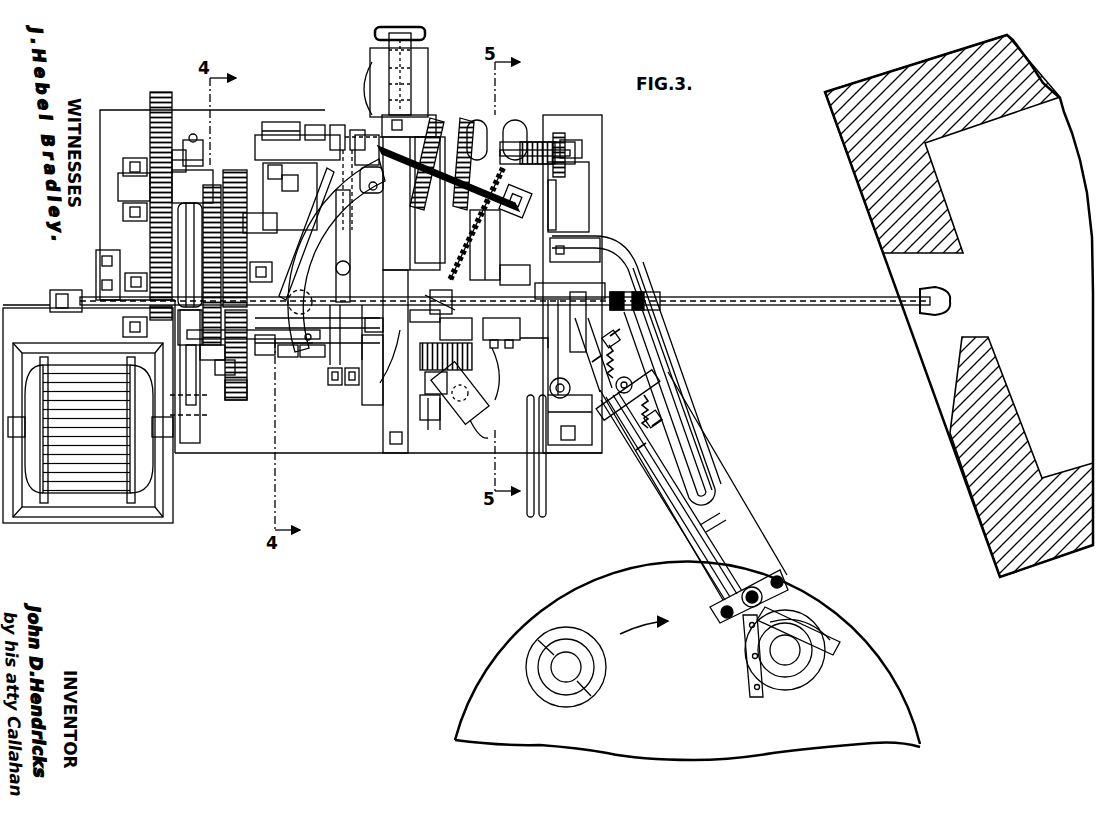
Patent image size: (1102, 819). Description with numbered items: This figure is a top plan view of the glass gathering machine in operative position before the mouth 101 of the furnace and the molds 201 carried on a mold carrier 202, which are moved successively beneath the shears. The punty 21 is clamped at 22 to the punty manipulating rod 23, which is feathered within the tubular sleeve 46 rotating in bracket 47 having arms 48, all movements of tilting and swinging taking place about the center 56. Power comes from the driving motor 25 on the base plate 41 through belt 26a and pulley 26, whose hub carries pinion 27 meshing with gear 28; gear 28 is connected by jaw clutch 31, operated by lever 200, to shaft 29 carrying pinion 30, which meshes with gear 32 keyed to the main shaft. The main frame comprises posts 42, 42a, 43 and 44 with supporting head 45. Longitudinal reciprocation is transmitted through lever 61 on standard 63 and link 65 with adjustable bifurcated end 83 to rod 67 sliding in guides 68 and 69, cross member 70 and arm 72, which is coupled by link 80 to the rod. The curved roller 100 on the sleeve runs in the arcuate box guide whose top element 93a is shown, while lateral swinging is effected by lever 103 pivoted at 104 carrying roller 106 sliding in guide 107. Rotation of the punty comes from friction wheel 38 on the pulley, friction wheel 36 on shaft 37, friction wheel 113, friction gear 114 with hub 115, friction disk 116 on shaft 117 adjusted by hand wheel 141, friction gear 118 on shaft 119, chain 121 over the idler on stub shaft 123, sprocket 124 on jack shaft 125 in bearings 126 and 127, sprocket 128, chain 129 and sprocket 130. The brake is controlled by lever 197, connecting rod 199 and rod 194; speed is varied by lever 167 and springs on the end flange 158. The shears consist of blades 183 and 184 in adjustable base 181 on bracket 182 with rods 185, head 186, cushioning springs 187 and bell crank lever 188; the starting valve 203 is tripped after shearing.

The punty 21 is at (880, 308).
The clamp 22 is at (646, 298).
The punty manipulating rod 23 is at (48, 300).
The driving motor 25 is at (88, 415).
The pulley 26 is at (205, 396).
The belt 26a is at (196, 404).
The pinion 27 is at (161, 324).
The gear 28 is at (154, 98).
The shaft 29 is at (212, 185).
The pinion 30 is at (240, 170).
The jaw clutch 31 is at (184, 152).
The gear 32 is at (248, 390).
The friction wheel 36 is at (200, 222).
The shaft 37 is at (280, 222).
The friction wheel 38 is at (205, 278).
The base plate 41 is at (342, 446).
The supporting post 42 is at (582, 200).
The supporting post 42a is at (560, 446).
The supporting post 43 is at (430, 200).
The supporting post 44 is at (388, 400).
The supporting head 45 is at (527, 272).
The tubular sleeve 46 is at (439, 293).
The supporting bracket 47 is at (478, 342).
The arms 48 is at (489, 245).
The center 56 is at (441, 325).
The lever 61 is at (318, 357).
The standard 63 is at (342, 388).
The link 65 is at (248, 355).
The rod 67 is at (520, 369).
The guide 68 is at (501, 333).
The guide 69 is at (381, 357).
The cross member 70 is at (548, 352).
The arm 72 is at (560, 300).
The link 80 is at (125, 322).
The bifurcated end 83 is at (292, 357).
The top element 93a is at (306, 234).
The curved roller 100 is at (336, 255).
The mouth 101 is at (960, 275).
The lever 103 is at (470, 383).
The pivot 104 is at (440, 432).
The roller 106 is at (484, 406).
The guide 107 is at (490, 433).
The friction wheel 113 is at (382, 255).
The friction gear 114 is at (356, 130).
The hub 115 is at (338, 125).
The friction disk 116 is at (384, 82).
The shaft 117 is at (413, 80).
The friction gear 118 is at (433, 125).
The shaft 119 is at (533, 142).
The chain 121 is at (461, 178).
The stub shaft 123 is at (482, 150).
The sprocket 124 is at (428, 175).
The jack shaft 125 is at (410, 203).
The bearing 126 is at (448, 178).
The bearing 127 is at (585, 186).
The sprocket 128 is at (520, 142).
The chain 129 is at (470, 252).
The sprocket 130 is at (390, 400).
The hand wheel 141 is at (427, 33).
The end flange 158 is at (562, 160).
The lever 167 is at (575, 215).
The adjustable base 181 is at (742, 553).
The bracket 182 is at (679, 404).
The shear blade 183 is at (832, 630).
The shear blade 184 is at (745, 665).
The rods 185 is at (735, 530).
The head 186 is at (663, 392).
The cushioning springs 187 is at (645, 384).
The bell crank lever 188 is at (578, 324).
The rod 194 is at (318, 125).
The lever 197 is at (297, 157).
The connecting rod 199 is at (280, 122).
The lever 200 is at (196, 148).
The molds 201 is at (583, 667).
The mold carrier 202 is at (687, 660).
The starting valve 203 is at (538, 432).